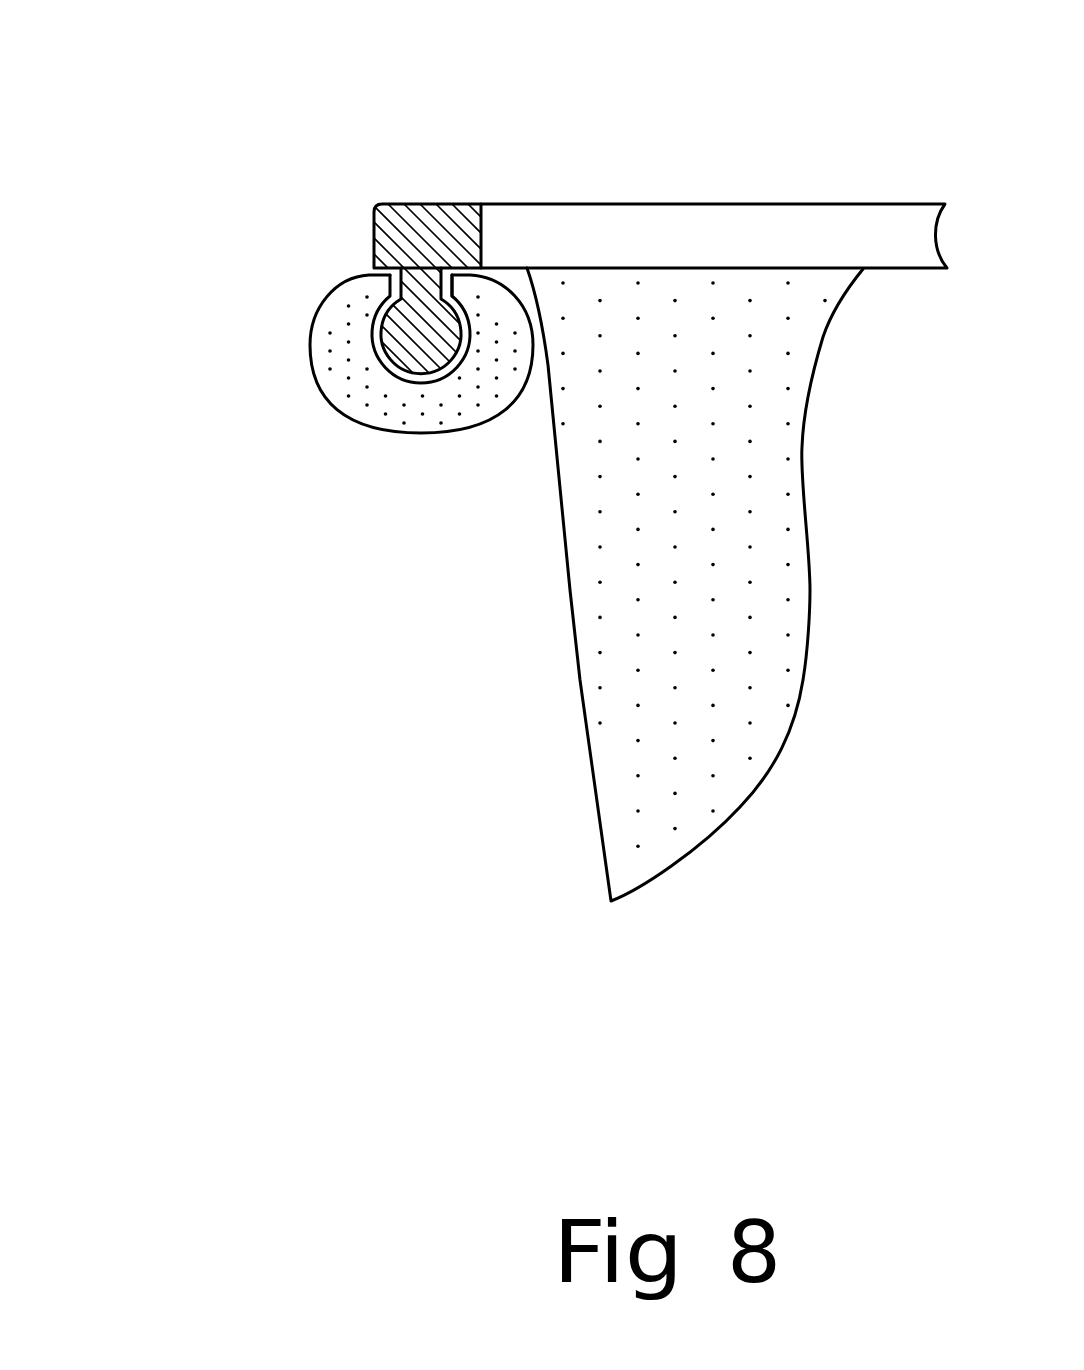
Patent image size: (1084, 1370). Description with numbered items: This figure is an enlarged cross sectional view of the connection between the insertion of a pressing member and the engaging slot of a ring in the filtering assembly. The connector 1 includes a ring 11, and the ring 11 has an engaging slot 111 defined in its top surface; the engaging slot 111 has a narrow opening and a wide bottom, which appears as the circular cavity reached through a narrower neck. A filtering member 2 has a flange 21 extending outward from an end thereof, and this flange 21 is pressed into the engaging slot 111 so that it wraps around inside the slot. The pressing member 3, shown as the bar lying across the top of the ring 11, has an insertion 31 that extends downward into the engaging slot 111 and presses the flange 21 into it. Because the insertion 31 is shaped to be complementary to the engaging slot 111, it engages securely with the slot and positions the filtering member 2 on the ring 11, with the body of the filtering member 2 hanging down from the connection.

The connector 1 is at (305, 400).
The ring 11 is at (313, 342).
The engaging slot 111 is at (413, 380).
The filtering member 2 is at (580, 680).
The flange 21 is at (445, 372).
The pressing member 3 is at (603, 203).
The insertion 31 is at (420, 323).